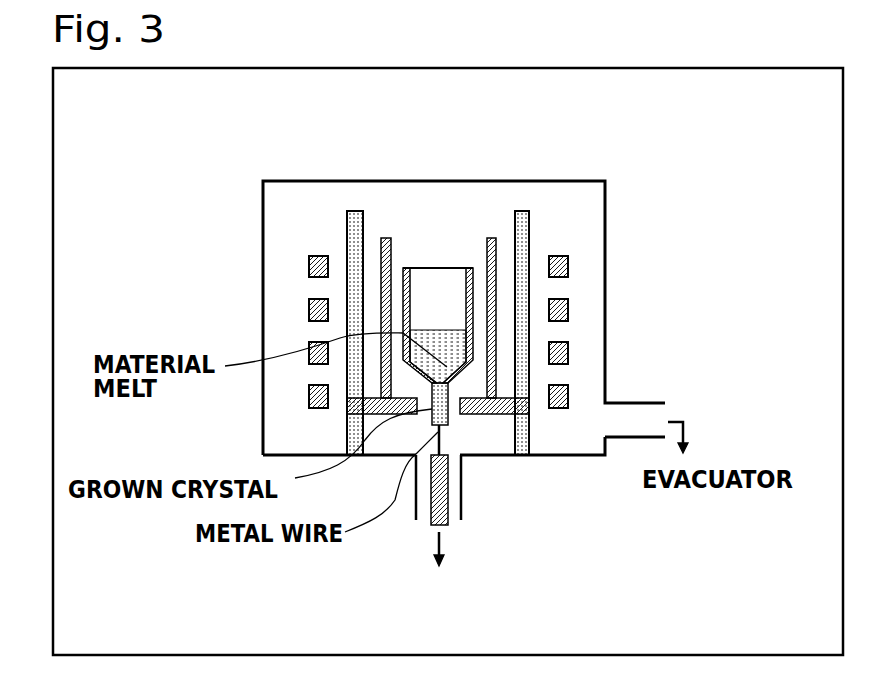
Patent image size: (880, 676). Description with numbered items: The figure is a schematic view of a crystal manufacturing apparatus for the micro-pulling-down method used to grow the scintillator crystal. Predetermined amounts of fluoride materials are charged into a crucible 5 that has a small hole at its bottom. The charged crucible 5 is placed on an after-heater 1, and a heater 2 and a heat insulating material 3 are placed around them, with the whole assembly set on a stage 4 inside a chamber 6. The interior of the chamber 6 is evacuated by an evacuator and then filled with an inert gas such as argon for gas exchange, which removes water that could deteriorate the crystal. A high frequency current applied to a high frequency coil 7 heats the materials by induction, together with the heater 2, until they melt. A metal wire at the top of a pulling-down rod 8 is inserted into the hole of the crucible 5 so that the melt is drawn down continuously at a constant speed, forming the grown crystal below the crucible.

The after-heater 1 is at (477, 384).
The heater 2 is at (473, 326).
The heat insulating material 3 is at (529, 236).
The stage 4 is at (527, 427).
The crucible 5 is at (473, 297).
The chamber 6 is at (432, 181).
The high frequency coil 7 is at (568, 396).
The pulling-down rod 8 is at (447, 485).